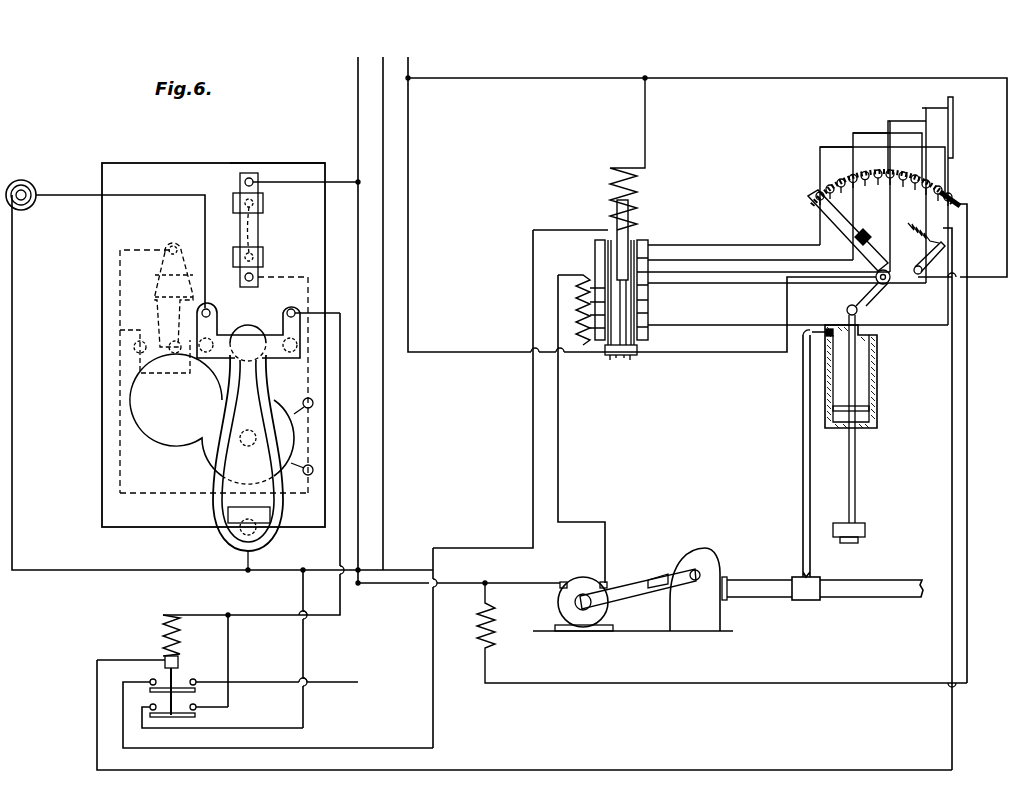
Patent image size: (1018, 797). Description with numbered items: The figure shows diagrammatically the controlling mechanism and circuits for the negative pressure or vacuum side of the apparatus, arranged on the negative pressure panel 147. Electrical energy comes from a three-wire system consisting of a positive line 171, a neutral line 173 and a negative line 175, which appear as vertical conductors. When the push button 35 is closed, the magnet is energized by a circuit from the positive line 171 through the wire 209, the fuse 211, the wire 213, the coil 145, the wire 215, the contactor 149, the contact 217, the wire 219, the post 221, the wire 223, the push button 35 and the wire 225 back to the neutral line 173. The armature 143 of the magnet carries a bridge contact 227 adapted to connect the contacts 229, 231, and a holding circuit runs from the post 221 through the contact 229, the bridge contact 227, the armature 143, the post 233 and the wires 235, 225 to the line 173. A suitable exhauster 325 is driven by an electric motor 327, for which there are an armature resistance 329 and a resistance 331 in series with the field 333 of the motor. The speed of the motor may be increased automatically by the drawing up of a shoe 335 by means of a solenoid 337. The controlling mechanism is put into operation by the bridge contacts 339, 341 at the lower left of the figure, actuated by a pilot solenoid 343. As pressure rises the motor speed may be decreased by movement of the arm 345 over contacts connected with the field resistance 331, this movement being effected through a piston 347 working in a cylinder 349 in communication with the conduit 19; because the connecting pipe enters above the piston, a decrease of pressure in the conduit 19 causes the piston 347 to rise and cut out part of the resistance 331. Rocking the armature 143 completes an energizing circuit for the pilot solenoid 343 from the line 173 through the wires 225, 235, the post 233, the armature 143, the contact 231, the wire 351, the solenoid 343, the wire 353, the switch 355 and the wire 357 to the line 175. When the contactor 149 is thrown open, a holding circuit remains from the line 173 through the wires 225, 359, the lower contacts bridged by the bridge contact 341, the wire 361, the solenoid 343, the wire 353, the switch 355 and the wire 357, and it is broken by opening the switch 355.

The push button 35 is at (23, 180).
The negative pressure panel 147 is at (102, 467).
The wire 209 is at (286, 172).
The positive line 171 is at (358, 145).
The neutral line 173 is at (383, 148).
The negative line 175 is at (410, 170).
The wire 223 is at (150, 195).
The wire 225 is at (12, 282).
The fuse 211 is at (262, 222).
The wire 213 is at (290, 277).
The contact 217 is at (120, 332).
The wire 215 is at (162, 485).
The wire 219 is at (160, 378).
The contactor 149 is at (175, 313).
The post 221 is at (210, 312).
The contact 231 is at (288, 340).
The contact 229 is at (210, 353).
The bridge contact 227 is at (281, 358).
The armature 143 is at (240, 380).
The coil 145 is at (212, 440).
The post 233 is at (243, 531).
The wire 235 is at (262, 546).
The wire 351 is at (341, 380).
The pilot solenoid 343 is at (165, 638).
The bridge contact 339 is at (185, 684).
The bridge contact 341 is at (197, 715).
The wire 361 is at (230, 633).
The wire 359 is at (305, 650).
The wire 353 is at (508, 770).
The field 333 is at (493, 630).
The electric motor 327 is at (585, 628).
The exhauster 325 is at (718, 562).
The conduit 19 is at (885, 597).
The armature resistance 329 is at (580, 276).
The solenoid 337 is at (637, 210).
The shoe 335 is at (642, 350).
The wire 357 is at (970, 78).
The resistance 331 is at (884, 183).
The arm 345 is at (858, 248).
The switch 355 is at (917, 258).
The cylinder 349 is at (878, 360).
The piston 347 is at (870, 409).